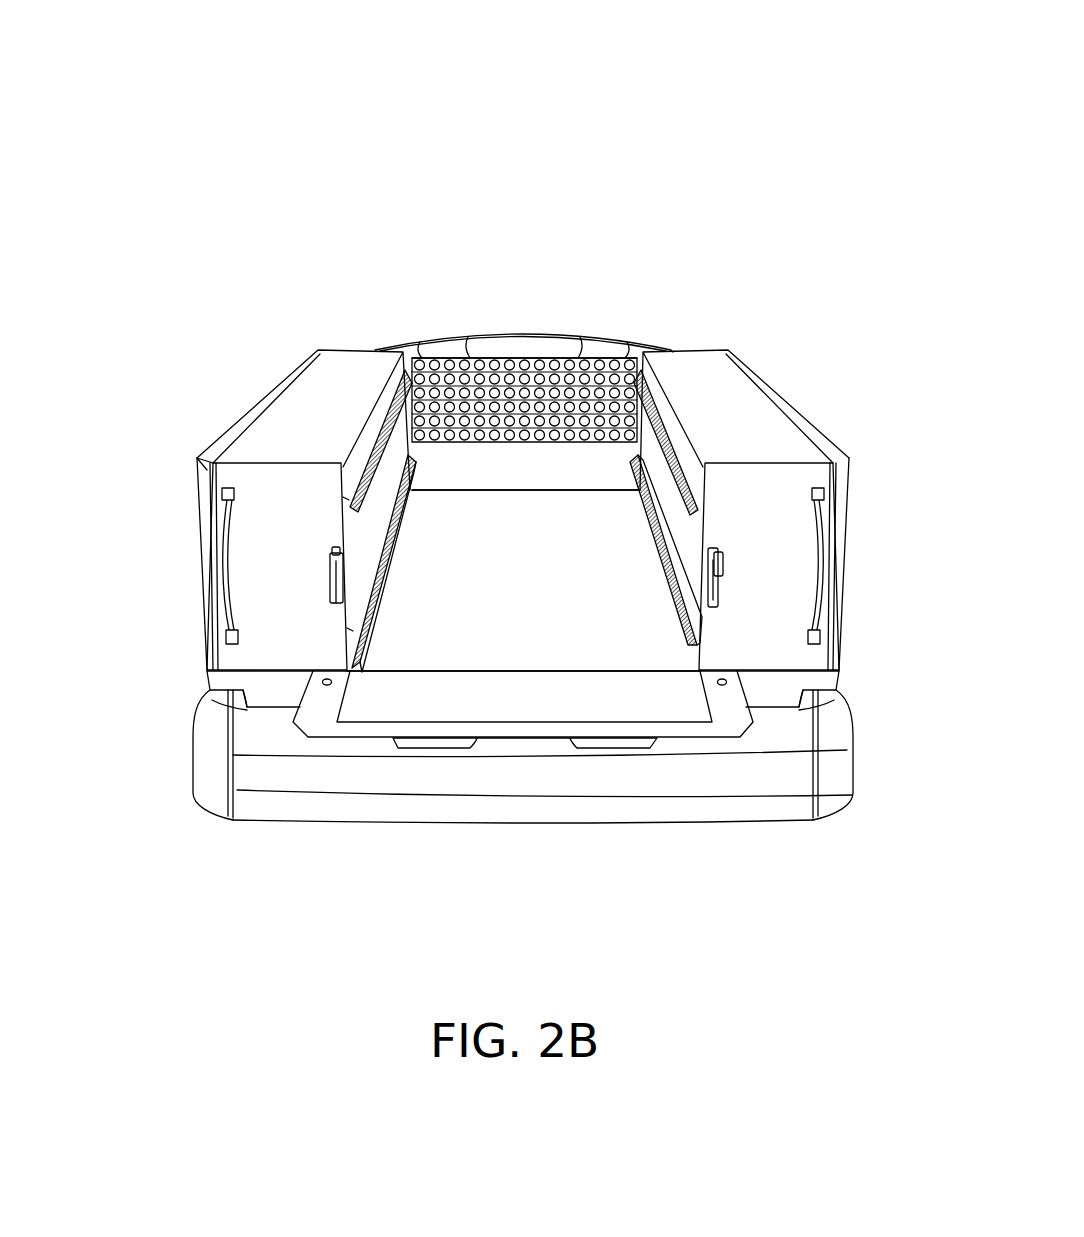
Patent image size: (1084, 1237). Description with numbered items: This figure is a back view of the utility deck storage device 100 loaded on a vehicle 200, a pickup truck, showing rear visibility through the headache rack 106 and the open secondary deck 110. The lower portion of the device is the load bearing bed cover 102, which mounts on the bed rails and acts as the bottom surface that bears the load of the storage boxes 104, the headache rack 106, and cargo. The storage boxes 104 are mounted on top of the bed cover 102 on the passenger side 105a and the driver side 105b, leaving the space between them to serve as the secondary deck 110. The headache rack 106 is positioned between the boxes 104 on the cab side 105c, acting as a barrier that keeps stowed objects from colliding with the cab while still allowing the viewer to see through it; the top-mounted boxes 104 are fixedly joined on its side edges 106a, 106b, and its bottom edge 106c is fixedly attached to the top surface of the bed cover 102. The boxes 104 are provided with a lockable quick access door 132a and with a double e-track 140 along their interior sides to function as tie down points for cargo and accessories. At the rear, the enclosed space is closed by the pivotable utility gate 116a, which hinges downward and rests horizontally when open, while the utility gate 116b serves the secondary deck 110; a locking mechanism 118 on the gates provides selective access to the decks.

The utility deck storage device 100 is at (247, 130).
The load bearing bed cover 102 is at (617, 632).
The storage boxes 104 is at (232, 470).
The passenger side 105a is at (367, 343).
The driver side 105b is at (690, 343).
The cab side 105c is at (515, 355).
The headache rack 106 is at (433, 360).
The side edge of headache rack 106a is at (387, 388).
The side edge of headache rack 106b is at (650, 383).
The bottom edge of headache rack 106c is at (613, 483).
The secondary deck 110 is at (593, 357).
The utility gate 116a is at (397, 698).
The utility gate 116b is at (497, 773).
The locking mechanism 118 is at (722, 560).
The access door 132a is at (203, 470).
The double e-track 140 is at (350, 632).
The vehicle 200 is at (533, 325).